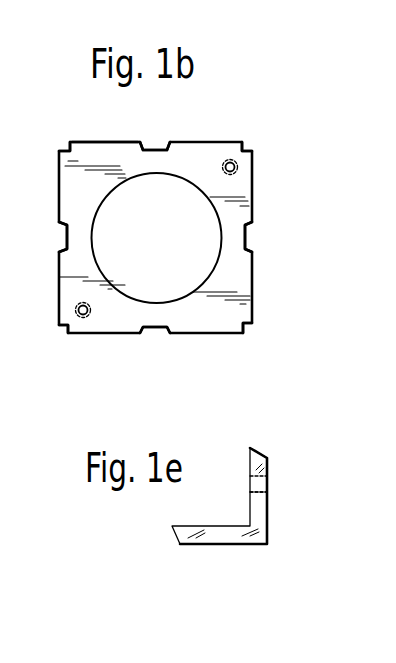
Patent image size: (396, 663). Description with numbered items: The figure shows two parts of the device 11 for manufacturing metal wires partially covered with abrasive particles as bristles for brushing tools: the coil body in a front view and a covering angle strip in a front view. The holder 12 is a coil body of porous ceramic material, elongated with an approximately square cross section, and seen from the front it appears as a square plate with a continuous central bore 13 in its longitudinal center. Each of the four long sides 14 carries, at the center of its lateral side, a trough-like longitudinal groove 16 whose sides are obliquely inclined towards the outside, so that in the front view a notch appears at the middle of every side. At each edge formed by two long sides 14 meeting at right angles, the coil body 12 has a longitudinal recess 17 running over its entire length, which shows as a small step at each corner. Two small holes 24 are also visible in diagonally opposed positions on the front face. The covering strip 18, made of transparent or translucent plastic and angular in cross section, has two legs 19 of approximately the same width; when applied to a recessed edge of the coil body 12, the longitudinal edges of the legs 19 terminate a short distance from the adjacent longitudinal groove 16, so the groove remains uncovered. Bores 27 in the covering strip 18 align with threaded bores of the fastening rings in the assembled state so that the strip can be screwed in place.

In FIG. 1B, the device 11 is at (361, 86).
In FIG. 1B, the holder 12 is at (203, 142).
In FIG. 1B, the central bore 13 is at (135, 298).
In FIG. 1B, the long sides 14 is at (105, 141).
In FIG. 1B, the longitudinal groove 16 is at (155, 150).
In FIG. 1B, the longitudinal recess 17 is at (67, 148).
In FIG. 1B, the mounting holes 24 is at (237, 168).
In FIG. 1E, the covering strip 18 is at (257, 546).
In FIG. 1E, the legs 19 is at (256, 461).
In FIG. 1E, the bores 27 is at (267, 491).